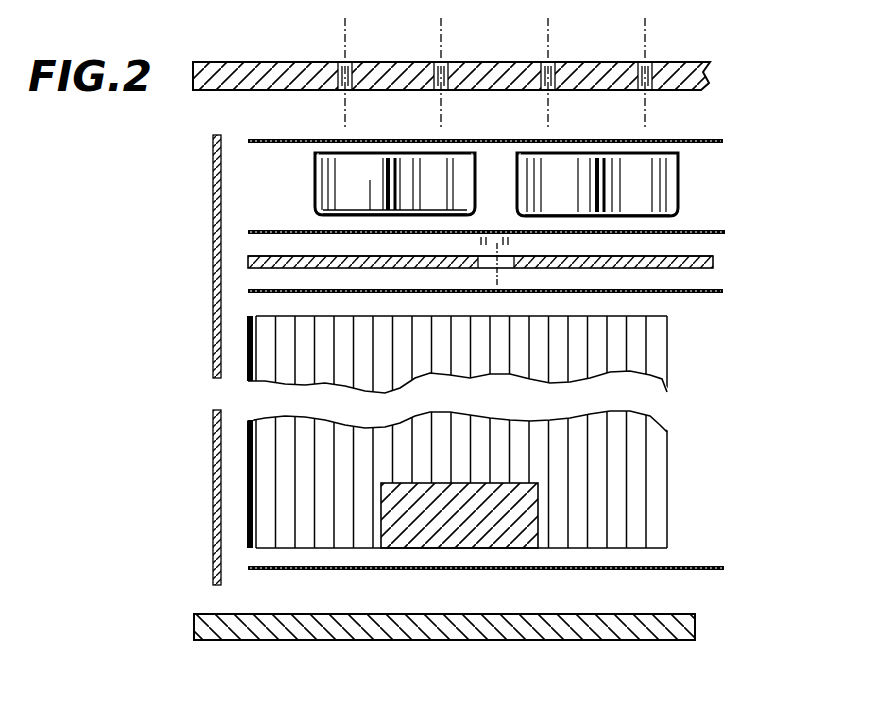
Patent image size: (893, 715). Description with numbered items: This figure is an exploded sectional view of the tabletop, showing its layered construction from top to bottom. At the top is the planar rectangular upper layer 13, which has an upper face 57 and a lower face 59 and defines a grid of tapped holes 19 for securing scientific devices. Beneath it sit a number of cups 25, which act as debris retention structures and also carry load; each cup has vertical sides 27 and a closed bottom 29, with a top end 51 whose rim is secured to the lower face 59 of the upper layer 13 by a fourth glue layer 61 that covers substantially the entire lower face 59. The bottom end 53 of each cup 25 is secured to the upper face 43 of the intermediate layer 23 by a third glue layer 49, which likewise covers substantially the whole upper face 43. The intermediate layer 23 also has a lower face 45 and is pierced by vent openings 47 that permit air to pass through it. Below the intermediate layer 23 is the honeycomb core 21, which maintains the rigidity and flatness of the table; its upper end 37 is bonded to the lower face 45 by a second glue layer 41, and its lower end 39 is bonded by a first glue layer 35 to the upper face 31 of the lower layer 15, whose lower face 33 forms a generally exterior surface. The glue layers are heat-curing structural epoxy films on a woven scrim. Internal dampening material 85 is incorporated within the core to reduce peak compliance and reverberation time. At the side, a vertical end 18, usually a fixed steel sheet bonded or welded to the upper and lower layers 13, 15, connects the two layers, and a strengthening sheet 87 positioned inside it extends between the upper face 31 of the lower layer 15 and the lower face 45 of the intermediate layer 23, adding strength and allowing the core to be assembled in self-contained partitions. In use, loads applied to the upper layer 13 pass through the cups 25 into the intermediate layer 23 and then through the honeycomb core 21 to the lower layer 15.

The upper layer 13 is at (179, 95).
The lower layer 15 is at (177, 631).
The ends 18 is at (212, 322).
The tapped holes 19 is at (343, 60).
The honeycomb core 21 is at (700, 374).
The intermediate layer 23 is at (746, 271).
The cups 25 is at (298, 196).
The vertical sides 27 is at (313, 176).
The closed bottom 29 is at (343, 212).
The upper face 31 is at (694, 612).
The lower face 33 is at (650, 641).
The first glue layer 35 is at (694, 572).
The upper end 37 is at (636, 316).
The lower end 39 is at (521, 541).
The second glue layer 41 is at (292, 289).
The upper face 43 is at (292, 257).
The lower face 45 is at (288, 269).
The vent openings 47 is at (503, 268).
The third glue layer 49 is at (724, 232).
The top end 51 is at (315, 153).
The bottom end 53 is at (330, 216).
The upper face 57 is at (700, 62).
The lower face 59 is at (692, 92).
The fourth glue layer 61 is at (722, 142).
The internal dampening material 85 is at (459, 466).
The strengthening sheets 87 is at (248, 378).